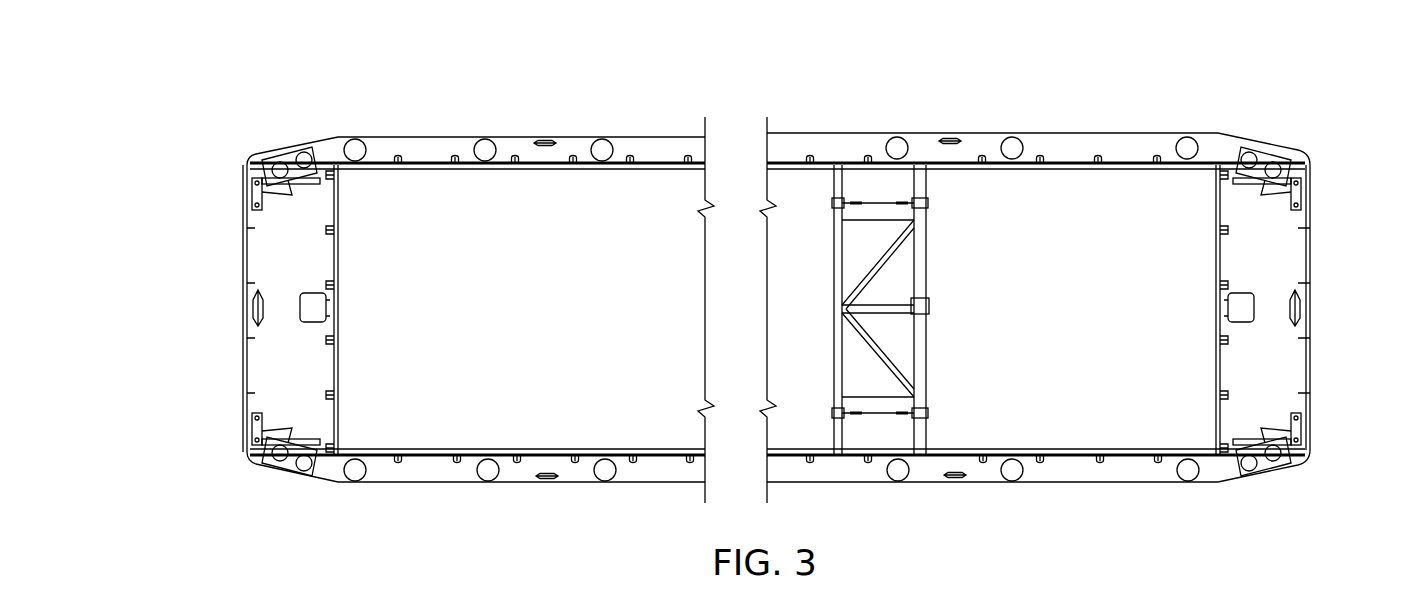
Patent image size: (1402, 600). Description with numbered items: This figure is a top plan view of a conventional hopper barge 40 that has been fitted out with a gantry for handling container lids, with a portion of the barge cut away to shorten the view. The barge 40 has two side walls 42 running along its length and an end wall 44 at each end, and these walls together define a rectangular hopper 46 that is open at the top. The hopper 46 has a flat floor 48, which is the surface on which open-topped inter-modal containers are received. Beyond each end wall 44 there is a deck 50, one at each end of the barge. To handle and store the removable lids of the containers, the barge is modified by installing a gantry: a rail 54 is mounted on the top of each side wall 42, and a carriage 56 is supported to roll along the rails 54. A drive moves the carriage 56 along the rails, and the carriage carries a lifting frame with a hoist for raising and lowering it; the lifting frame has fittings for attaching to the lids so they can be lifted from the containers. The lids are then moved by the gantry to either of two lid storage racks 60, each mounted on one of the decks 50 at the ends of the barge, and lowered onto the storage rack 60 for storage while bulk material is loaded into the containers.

The hopper barge 40 is at (980, 123).
The side wall 42 is at (843, 145).
The end wall 44 is at (328, 259).
The hopper 46 is at (432, 198).
The flat floor 48 is at (1075, 309).
The deck 50 is at (307, 370).
The rail 54 is at (645, 172).
The carriage 56 is at (925, 256).
The lid storage rack 60 is at (255, 193).